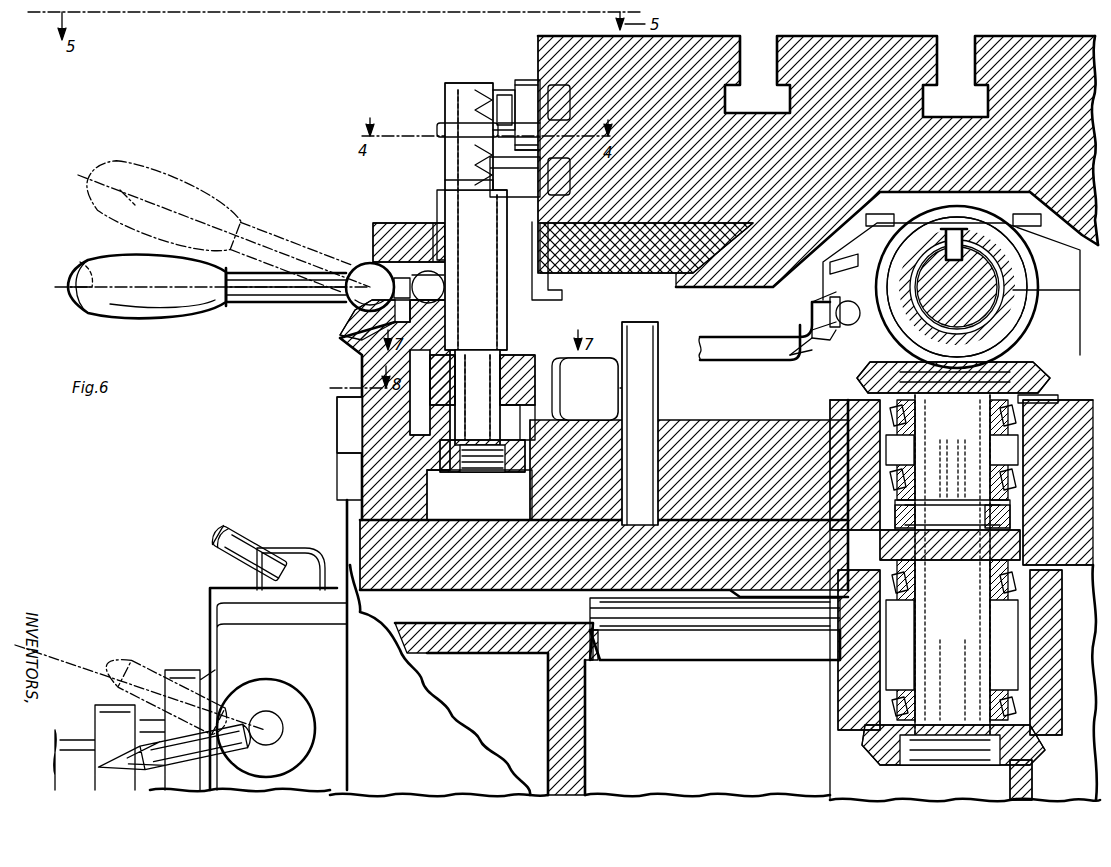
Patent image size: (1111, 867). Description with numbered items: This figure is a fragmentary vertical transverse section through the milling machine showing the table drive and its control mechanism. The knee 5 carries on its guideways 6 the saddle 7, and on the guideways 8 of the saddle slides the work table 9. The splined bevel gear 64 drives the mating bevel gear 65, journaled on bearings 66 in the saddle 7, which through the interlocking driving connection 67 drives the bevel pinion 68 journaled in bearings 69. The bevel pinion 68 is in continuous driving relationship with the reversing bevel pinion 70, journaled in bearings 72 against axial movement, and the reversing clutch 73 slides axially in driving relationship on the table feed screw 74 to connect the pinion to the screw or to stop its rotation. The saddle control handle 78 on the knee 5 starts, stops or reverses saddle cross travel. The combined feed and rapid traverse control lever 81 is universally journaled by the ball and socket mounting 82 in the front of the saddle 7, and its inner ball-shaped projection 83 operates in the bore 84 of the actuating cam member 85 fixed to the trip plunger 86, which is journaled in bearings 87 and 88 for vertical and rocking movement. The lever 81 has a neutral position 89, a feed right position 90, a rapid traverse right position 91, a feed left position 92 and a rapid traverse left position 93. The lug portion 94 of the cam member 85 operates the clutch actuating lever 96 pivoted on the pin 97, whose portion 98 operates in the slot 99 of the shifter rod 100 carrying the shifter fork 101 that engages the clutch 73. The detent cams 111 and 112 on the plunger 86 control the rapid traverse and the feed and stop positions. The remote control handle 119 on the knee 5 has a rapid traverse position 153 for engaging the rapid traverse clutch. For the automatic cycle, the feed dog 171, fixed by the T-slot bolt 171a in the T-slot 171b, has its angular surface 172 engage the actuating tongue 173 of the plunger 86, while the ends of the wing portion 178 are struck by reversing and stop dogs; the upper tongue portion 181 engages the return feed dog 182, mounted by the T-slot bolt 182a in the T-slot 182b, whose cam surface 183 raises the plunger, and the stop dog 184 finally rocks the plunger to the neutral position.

The knee 5 is at (230, 617).
The guideways 6 is at (337, 462).
The saddle 7 is at (355, 540).
The guideways 8 is at (722, 238).
The work table 9 is at (818, 161).
The bevel gear 64 is at (1030, 778).
The mating bevel gear 65 is at (875, 760).
The bearings 66 is at (905, 700).
The interlocking driving connection 67 is at (1020, 520).
The bevel pinion 68 is at (1040, 375).
The bearings 69 is at (1028, 430).
The reversing bevel pinion 70 is at (1030, 312).
The bearings 72 is at (832, 238).
The reversing clutch 73 is at (1000, 285).
The table feed screw 74 is at (957, 278).
The saddle control handle 78 is at (248, 540).
The combined feed and rapid traverse control lever 81 is at (212, 287).
The ball and socket mounting 82 is at (395, 272).
The ball-shaped projection 83 is at (392, 281).
The bore 84 is at (444, 306).
The actuating cam member 85 is at (520, 300).
The trip plunger 86 is at (476, 264).
The bearing 87 is at (447, 238).
The bearing 88 is at (520, 440).
The neutral position 89 is at (62, 297).
The feed right position 90 is at (78, 270).
The rapid traverse right position 91 is at (170, 205).
The feed left position 92 is at (88, 260).
The rapid traverse left position 93 is at (132, 192).
The lug portion 94 is at (425, 345).
The clutch actuating lever 96 is at (672, 335).
The pin 97 is at (640, 325).
The portion 98 is at (824, 355).
The slot 99 is at (838, 342).
The shifter rod 100 is at (862, 300).
The shifter fork 101 is at (855, 318).
The detent cam 111 is at (522, 378).
The detent cam 112 is at (528, 395).
The handle 119 is at (153, 733).
The rapid traverse position 153 is at (22, 648).
The feed dog 171 is at (515, 177).
The T-slot bolt 171a is at (535, 160).
The T-slot 171b is at (568, 175).
The angular surface 172 is at (447, 183).
The actuating tongue 173 is at (447, 173).
The wing portion 178 is at (440, 124).
The upper tongue portion 181 is at (488, 90).
The return feed dog 182 is at (540, 90).
The T-slot bolt 182a is at (530, 80).
The T-slot 182b is at (585, 110).
The cam surface 183 is at (518, 90).
The stop dog 184 is at (530, 120).